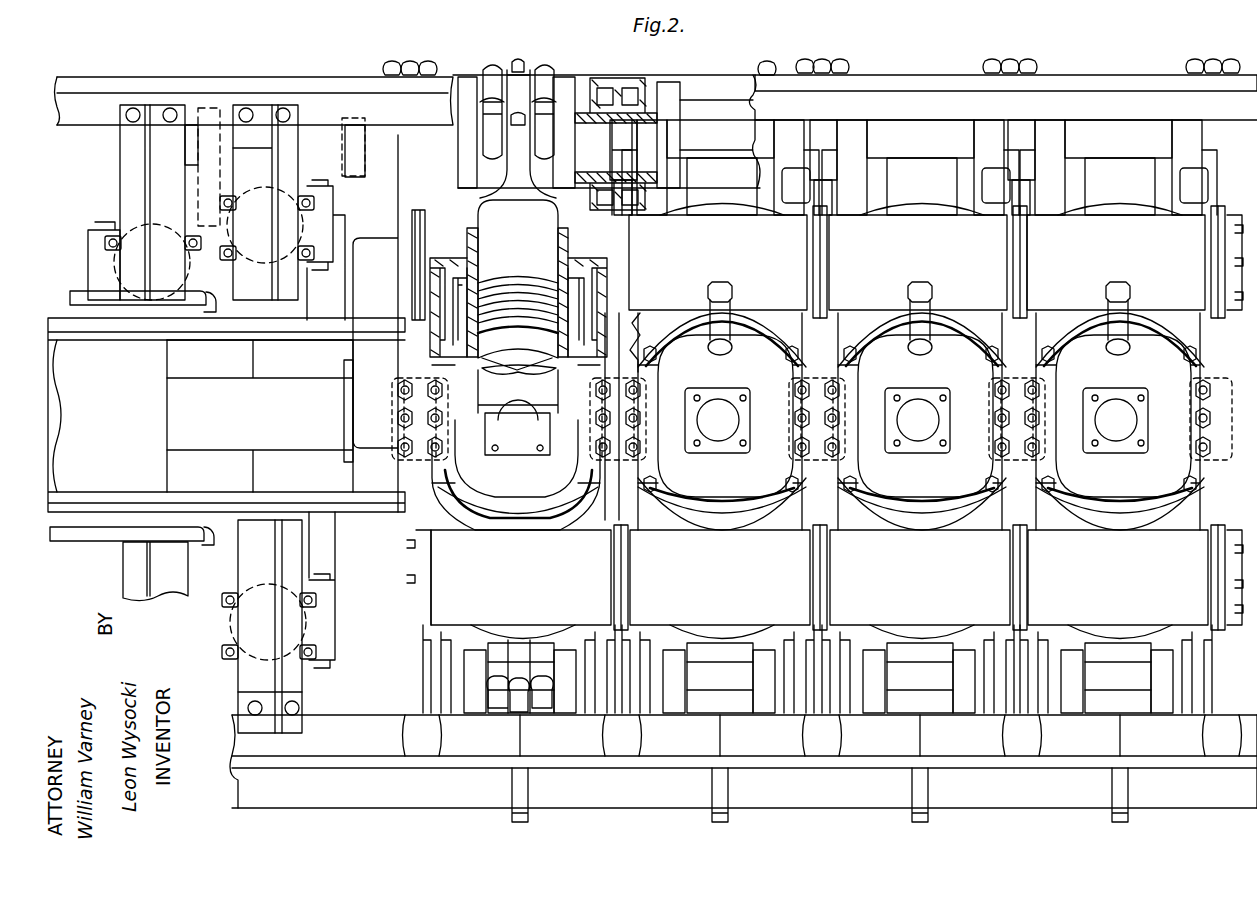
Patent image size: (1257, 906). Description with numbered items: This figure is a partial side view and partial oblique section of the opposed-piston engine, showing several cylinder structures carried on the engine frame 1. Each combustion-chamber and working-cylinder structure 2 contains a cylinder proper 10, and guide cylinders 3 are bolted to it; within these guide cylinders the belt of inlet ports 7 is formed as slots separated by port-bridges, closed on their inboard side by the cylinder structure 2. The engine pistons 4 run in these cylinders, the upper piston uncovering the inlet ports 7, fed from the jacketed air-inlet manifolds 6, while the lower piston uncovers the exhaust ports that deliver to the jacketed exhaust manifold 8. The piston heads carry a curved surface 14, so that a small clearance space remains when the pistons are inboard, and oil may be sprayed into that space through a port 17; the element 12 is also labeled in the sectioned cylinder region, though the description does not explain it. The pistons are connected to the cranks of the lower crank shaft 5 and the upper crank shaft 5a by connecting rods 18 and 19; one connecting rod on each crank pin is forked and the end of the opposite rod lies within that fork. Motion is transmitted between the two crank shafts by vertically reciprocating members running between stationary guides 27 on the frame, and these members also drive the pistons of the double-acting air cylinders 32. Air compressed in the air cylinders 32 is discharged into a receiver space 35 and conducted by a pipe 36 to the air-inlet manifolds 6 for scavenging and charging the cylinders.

The engine frame 1 is at (900, 93).
The combustion-chamber and working-cylinder structure 2 is at (818, 421).
The guide cylinders 3 is at (712, 213).
The engine pistons 4 is at (518, 265).
The lower crank shaft 5 is at (722, 698).
The upper crank shaft 5a is at (713, 113).
The jacketed air-inlet manifolds 6 is at (446, 232).
The belt of inlet ports 7 is at (465, 342).
The jacketed exhaust manifold 8 is at (825, 577).
The cylinder proper 10 is at (518, 391).
The crosshead 12 is at (503, 357).
The curved surface 14 is at (518, 324).
The port 17 is at (816, 421).
The connecting rod 18 is at (518, 185).
The connecting rod 19 is at (512, 647).
The stationary guides 27 is at (217, 456).
The air cylinders 32 is at (226, 431).
The receiver space 35 is at (260, 416).
The pipe 36 is at (375, 323).